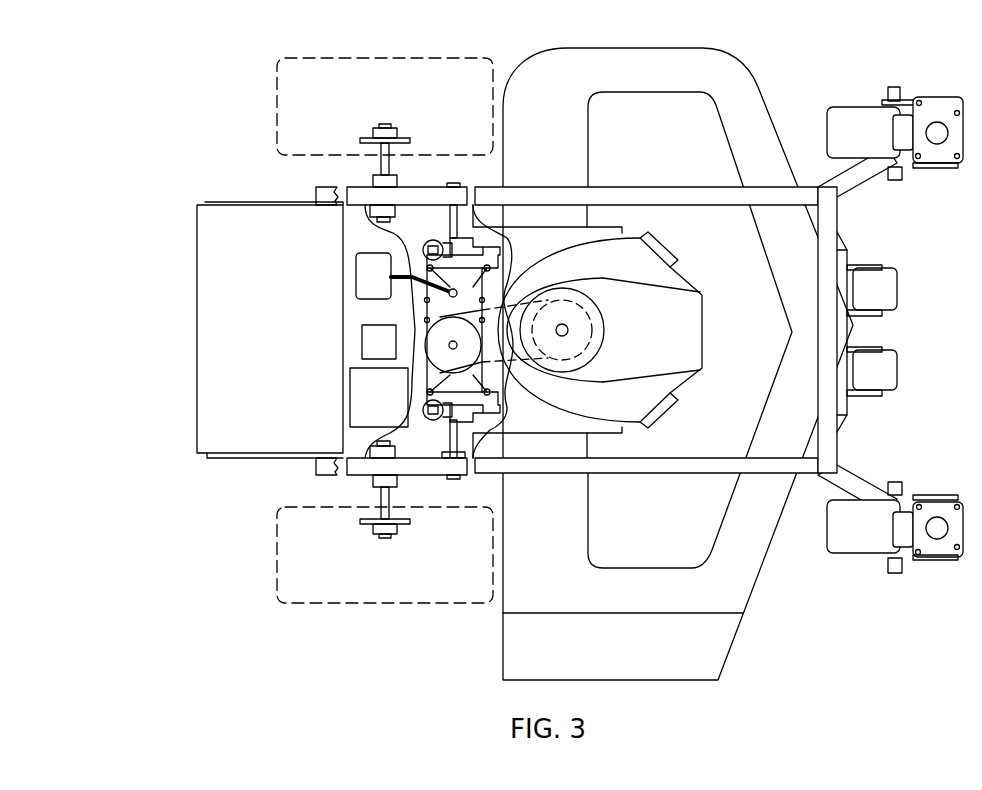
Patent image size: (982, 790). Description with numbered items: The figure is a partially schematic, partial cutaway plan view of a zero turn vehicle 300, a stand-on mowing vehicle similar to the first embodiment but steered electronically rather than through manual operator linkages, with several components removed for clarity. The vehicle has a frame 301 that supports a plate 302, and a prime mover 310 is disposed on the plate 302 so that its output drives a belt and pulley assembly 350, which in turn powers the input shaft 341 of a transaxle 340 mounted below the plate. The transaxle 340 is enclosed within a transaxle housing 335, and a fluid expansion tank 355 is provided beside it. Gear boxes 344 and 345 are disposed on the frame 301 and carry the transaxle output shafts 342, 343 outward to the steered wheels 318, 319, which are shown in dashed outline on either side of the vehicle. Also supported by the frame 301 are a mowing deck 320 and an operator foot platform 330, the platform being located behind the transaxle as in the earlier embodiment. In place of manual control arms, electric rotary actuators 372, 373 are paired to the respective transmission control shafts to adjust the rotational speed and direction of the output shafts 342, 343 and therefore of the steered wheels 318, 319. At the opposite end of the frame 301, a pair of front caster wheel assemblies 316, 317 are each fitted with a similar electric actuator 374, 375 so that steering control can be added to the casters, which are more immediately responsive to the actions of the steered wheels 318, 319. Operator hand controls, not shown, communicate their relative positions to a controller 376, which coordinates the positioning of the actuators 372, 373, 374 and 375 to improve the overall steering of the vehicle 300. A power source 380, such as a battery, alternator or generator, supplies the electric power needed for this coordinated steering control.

The zero turn vehicle 300 is at (110, 64).
The frame 301 is at (660, 187).
The plate 302 is at (535, 230).
The prime mover 310 is at (635, 340).
The caster wheel assembly 316 is at (857, 107).
The caster wheel assembly 317 is at (857, 553).
The steered wheel 318 is at (275, 76).
The steered wheel 319 is at (275, 588).
The mowing deck 320 is at (531, 533).
The operator foot platform 330 is at (240, 341).
The transaxle housing 335 is at (512, 297).
The transaxle 340 is at (510, 386).
The input shaft 341 is at (447, 347).
The output shaft 342 is at (455, 224).
The output shaft 343 is at (455, 440).
The gear box 344 is at (363, 187).
The gear box 345 is at (363, 475).
The belt and pulley assembly 350 is at (437, 333).
The fluid expansion tank 355 is at (368, 278).
The rotary actuator 372 is at (435, 242).
The rotary actuator 373 is at (435, 421).
The electric actuator 374 is at (933, 107).
The electric actuator 375 is at (933, 557).
The controller 376 is at (371, 344).
The power source 380 is at (364, 405).